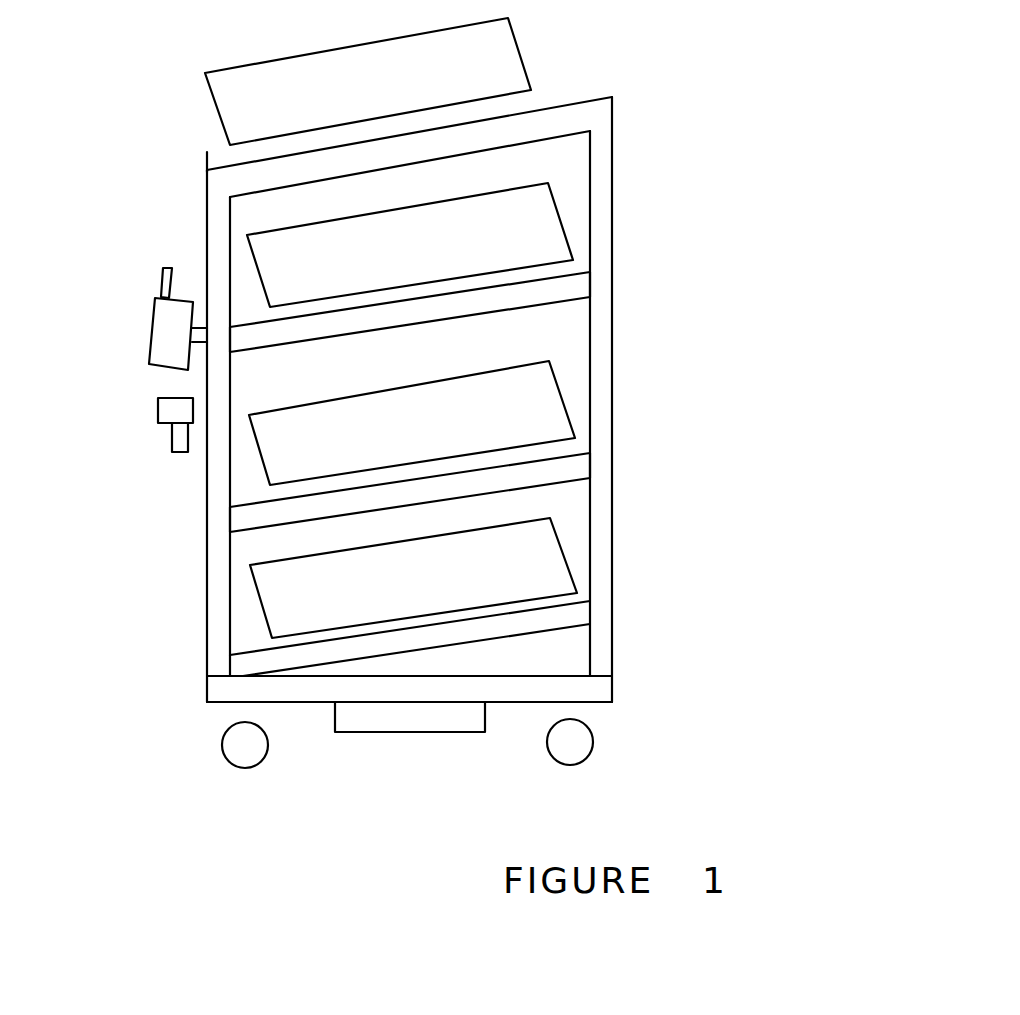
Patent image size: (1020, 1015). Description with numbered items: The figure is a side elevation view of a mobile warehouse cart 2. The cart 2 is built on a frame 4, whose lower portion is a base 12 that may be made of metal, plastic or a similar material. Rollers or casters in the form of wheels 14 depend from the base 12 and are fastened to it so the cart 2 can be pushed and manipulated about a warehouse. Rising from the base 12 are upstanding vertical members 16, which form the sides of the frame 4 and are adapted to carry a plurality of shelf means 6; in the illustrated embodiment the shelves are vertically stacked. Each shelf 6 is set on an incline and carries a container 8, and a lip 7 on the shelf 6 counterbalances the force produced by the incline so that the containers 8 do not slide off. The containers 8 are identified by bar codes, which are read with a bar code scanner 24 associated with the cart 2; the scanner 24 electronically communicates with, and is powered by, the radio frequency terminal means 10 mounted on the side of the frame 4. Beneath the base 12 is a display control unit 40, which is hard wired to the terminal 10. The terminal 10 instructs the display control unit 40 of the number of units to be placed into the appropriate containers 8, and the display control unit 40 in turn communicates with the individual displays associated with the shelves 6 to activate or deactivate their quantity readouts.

The cart 2 is at (658, 97).
The frame 4 is at (606, 377).
The shelf means 6 is at (566, 114).
The lip 7 is at (205, 160).
The container 8 is at (391, 328).
The radio frequency terminal means 10 is at (163, 322).
The base 12 is at (598, 689).
The wheels 14 is at (255, 757).
The upstanding vertical member 16 is at (602, 206).
The bar code scanner 24 is at (165, 410).
The display control unit 40 is at (390, 722).